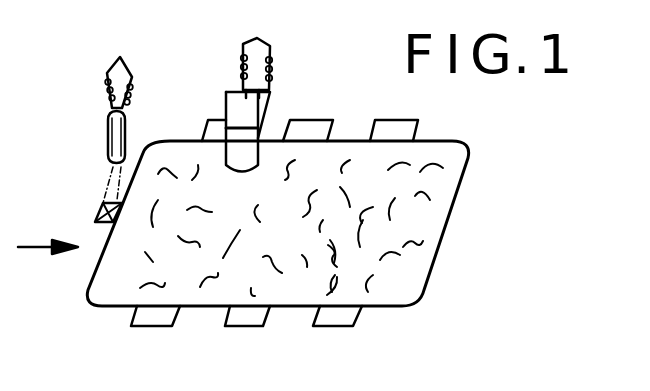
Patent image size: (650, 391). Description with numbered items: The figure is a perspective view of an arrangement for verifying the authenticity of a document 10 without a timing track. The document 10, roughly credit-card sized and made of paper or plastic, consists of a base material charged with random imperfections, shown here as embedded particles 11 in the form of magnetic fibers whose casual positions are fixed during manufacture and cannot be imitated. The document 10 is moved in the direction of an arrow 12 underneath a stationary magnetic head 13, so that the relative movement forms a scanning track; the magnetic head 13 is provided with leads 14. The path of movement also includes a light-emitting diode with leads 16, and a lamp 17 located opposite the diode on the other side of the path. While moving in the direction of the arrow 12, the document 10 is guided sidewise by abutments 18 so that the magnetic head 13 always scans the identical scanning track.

The document 10 is at (445, 229).
The particles 11 is at (405, 169).
The arrow 12 is at (41, 248).
The magnetic head 13 is at (266, 124).
The leads 14 is at (257, 38).
The leads 16 is at (121, 94).
The lamp 17 is at (101, 210).
The abutments 18 is at (313, 326).